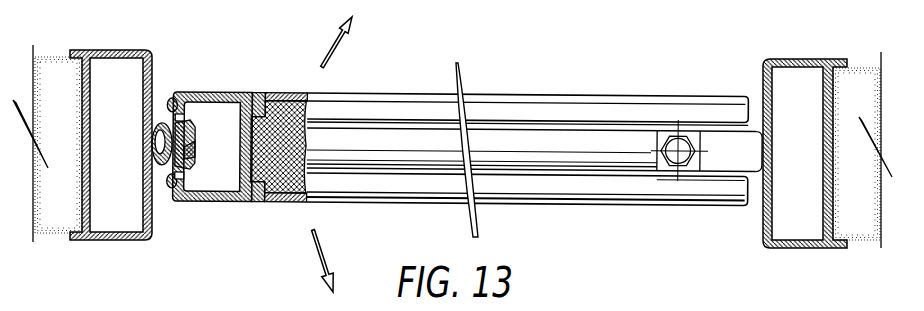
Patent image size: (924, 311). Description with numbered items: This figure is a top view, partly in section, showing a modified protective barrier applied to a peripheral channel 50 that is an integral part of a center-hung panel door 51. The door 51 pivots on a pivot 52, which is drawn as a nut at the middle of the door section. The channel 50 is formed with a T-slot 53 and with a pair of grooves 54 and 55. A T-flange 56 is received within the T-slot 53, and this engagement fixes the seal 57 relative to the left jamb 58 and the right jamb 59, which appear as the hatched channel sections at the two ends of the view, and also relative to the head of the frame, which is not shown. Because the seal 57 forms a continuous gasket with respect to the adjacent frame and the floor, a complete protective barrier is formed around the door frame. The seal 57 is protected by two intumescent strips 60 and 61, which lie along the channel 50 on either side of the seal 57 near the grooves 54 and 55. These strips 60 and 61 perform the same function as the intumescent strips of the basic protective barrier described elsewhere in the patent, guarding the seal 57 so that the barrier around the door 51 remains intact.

The peripheral channel 50 is at (218, 167).
The center-hung panel door 51 is at (437, 140).
The pivot 52 is at (673, 162).
The T-slot 53 is at (188, 151).
The groove 54 is at (180, 179).
The groove 55 is at (181, 108).
The T-flange 56 is at (186, 141).
The seal 57 is at (168, 147).
The left jamb 58 is at (101, 50).
The right jamb 59 is at (795, 59).
The intumescent strip 60 is at (169, 189).
The intumescent strip 61 is at (167, 103).